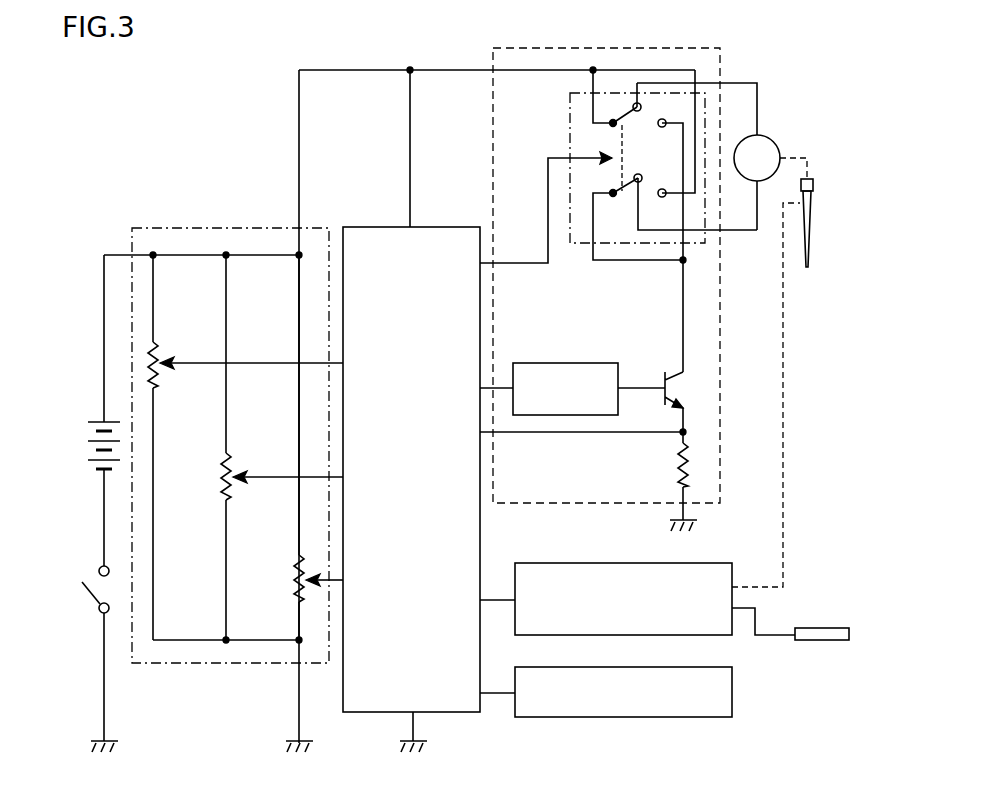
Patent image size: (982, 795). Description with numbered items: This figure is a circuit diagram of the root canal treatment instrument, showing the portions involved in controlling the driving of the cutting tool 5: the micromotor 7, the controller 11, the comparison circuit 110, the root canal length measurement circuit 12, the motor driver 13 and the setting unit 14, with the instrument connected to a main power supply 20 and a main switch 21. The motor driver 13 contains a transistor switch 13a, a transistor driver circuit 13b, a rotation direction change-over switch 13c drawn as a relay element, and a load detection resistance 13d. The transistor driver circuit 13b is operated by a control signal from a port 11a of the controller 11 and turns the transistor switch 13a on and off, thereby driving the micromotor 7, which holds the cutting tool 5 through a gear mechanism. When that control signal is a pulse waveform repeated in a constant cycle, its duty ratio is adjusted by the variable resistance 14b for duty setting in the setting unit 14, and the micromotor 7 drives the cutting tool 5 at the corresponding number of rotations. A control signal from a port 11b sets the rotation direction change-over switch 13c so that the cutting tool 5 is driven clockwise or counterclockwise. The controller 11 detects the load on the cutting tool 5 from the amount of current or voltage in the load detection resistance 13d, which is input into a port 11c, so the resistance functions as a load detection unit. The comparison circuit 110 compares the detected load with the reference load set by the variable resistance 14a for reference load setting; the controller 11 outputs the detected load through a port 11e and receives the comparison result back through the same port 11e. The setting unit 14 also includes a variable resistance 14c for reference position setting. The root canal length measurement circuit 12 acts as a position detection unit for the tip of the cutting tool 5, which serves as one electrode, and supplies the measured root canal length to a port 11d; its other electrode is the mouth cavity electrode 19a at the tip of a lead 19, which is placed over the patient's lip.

The cutting tool 5 is at (812, 216).
The micromotor 7 is at (775, 138).
The controller 11 is at (440, 227).
The port 11a is at (480, 390).
The port 11b is at (529, 212).
The port 11c is at (566, 434).
The port 11d is at (481, 601).
The port 11e is at (481, 694).
The root canal length measurement circuit 12 is at (690, 563).
The motor driver 13 is at (615, 48).
The transistor switch 13a is at (664, 380).
The transistor driver circuit 13b is at (567, 363).
The rotation direction change-over switch 13c is at (578, 140).
The load detection resistance 13d is at (680, 462).
The setting unit 14 is at (237, 476).
The variable resistance for reference load setting 14a is at (160, 378).
The variable resistance for duty setting 14b is at (233, 490).
The variable resistance for reference position setting 14c is at (290, 586).
The lead 19 is at (780, 637).
The mouth cavity electrode 19a is at (825, 628).
The main power supply 20 is at (97, 420).
The main switch 21 is at (88, 597).
The comparison circuit 110 is at (675, 667).